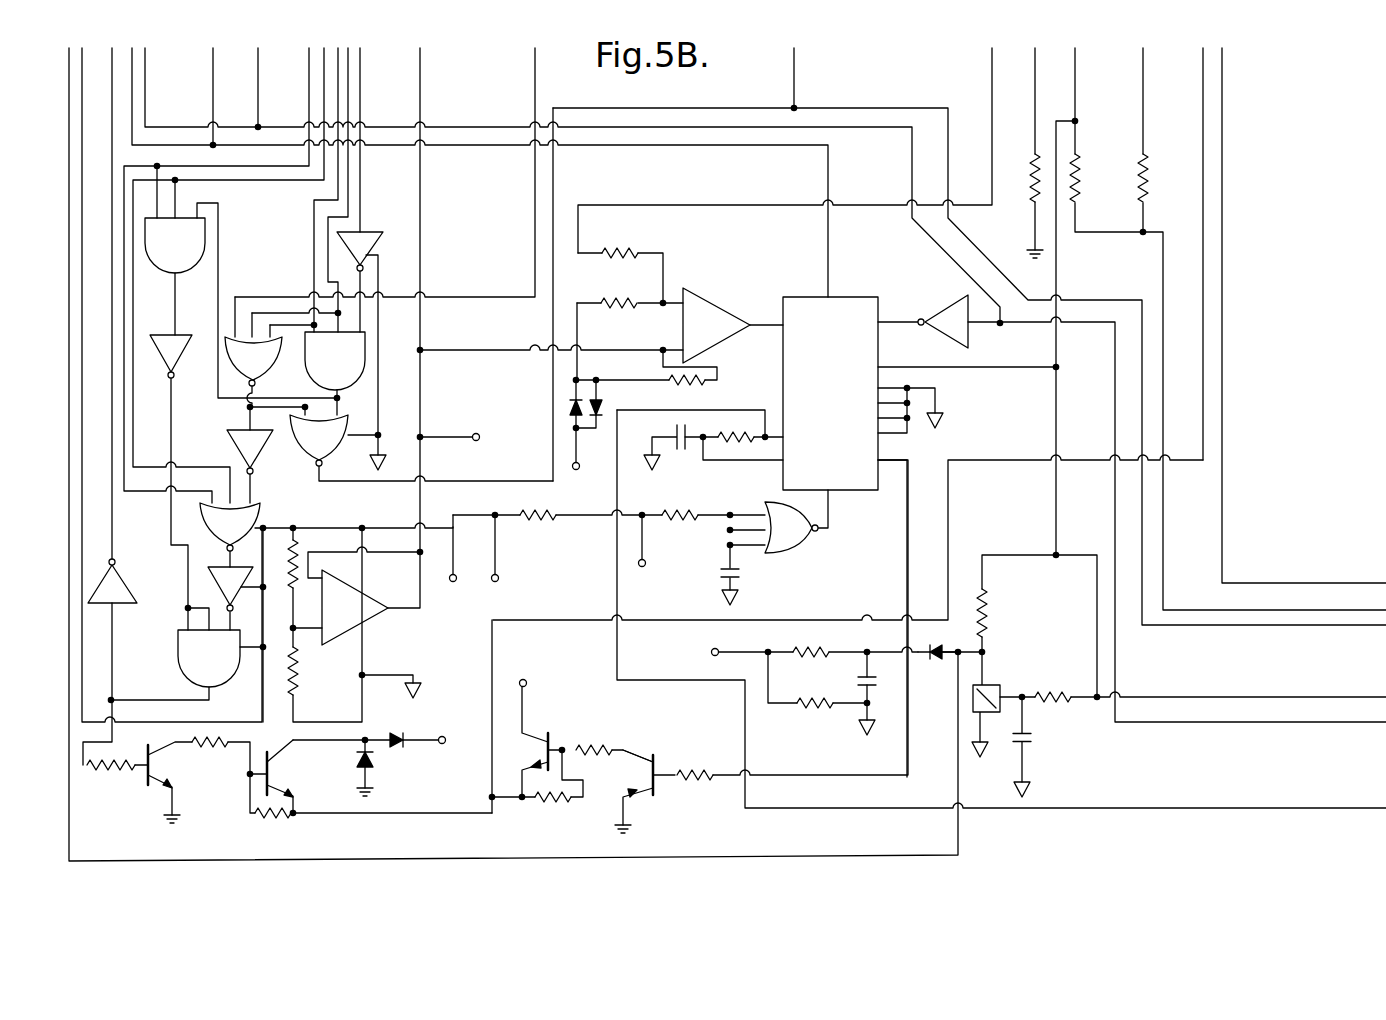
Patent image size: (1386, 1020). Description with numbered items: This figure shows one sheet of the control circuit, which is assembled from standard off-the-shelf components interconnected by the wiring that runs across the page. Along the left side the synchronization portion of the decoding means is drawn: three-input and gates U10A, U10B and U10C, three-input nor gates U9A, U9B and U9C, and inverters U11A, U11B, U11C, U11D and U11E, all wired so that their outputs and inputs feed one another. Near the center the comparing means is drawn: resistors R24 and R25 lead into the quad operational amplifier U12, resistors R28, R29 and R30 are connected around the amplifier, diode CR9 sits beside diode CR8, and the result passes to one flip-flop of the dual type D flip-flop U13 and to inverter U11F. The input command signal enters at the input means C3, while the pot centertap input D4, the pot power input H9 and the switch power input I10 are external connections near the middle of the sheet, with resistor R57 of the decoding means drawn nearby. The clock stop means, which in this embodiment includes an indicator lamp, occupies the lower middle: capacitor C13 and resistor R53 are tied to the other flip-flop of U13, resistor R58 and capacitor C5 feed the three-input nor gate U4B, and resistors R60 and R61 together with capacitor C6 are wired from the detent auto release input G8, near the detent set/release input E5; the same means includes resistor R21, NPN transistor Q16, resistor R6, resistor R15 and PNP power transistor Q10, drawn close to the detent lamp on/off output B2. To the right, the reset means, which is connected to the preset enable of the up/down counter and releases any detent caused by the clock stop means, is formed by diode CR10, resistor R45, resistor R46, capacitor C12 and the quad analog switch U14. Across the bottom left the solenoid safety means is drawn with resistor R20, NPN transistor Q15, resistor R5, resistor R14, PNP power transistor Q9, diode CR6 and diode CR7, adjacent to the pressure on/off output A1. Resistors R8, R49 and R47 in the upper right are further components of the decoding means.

The and gate U10A is at (175, 245).
The inverter U11B is at (180, 352).
The inverter U11A is at (370, 240).
The nor gate U9C is at (253, 370).
The and gate U10C is at (335, 361).
The nor gate U9A is at (319, 440).
The inverter U11C is at (240, 444).
The nor gate U9B is at (230, 527).
The inverter U11E is at (214, 586).
The and gate U10B is at (209, 658).
The inverter U11D is at (123, 598).
The resistor R25 is at (298, 545).
The resistor R24 is at (298, 665).
The quad operational amplifier U12 is at (536, 466).
The resistor R20 is at (133, 772).
The NPN transistor Q15 is at (152, 762).
The resistor R5 is at (215, 734).
The PNP power transistor Q9 is at (268, 772).
The resistor R14 is at (272, 820).
The diode CR6 is at (370, 764).
The diode CR7 is at (404, 735).
The pressure on/off output A1 is at (455, 751).
The PNP power transistor Q10 is at (548, 750).
The detent lamp on/off output B2 is at (540, 672).
The resistor R15 is at (550, 808).
The resistor R6 is at (582, 744).
The NPN transistor Q16 is at (652, 776).
The resistor R21 is at (690, 772).
The resistor R30 is at (622, 255).
The resistor R29 is at (636, 307).
The resistor R28 is at (702, 384).
The diode CR8 is at (570, 406).
The diode CR9 is at (602, 406).
The input means C3 is at (585, 480).
The pot centertap input D4 is at (473, 438).
The capacitor C13 is at (676, 432).
The resistor R53 is at (745, 452).
The dual type D flip-flop U13 is at (830, 393).
The inverter U11F is at (952, 290).
The resistor R57 is at (535, 523).
The resistor R58 is at (665, 523).
The pot power input H9 is at (453, 576).
The switch power input I10 is at (500, 570).
The detent set/release input E5 is at (654, 555).
The capacitor C5 is at (740, 571).
The nor gate U4B is at (792, 541).
The detent auto release input G8 is at (691, 656).
The resistor R60 is at (792, 656).
The resistor R61 is at (797, 710).
The capacitor C6 is at (872, 680).
The diode CR10 is at (925, 650).
The resistor R45 is at (992, 608).
The quad analog switch U14 is at (996, 688).
The resistor R46 is at (1042, 704).
The capacitor C12 is at (1031, 740).
The resistor R8 is at (1030, 206).
The resistor R49 is at (1082, 170).
The resistor R47 is at (1148, 170).